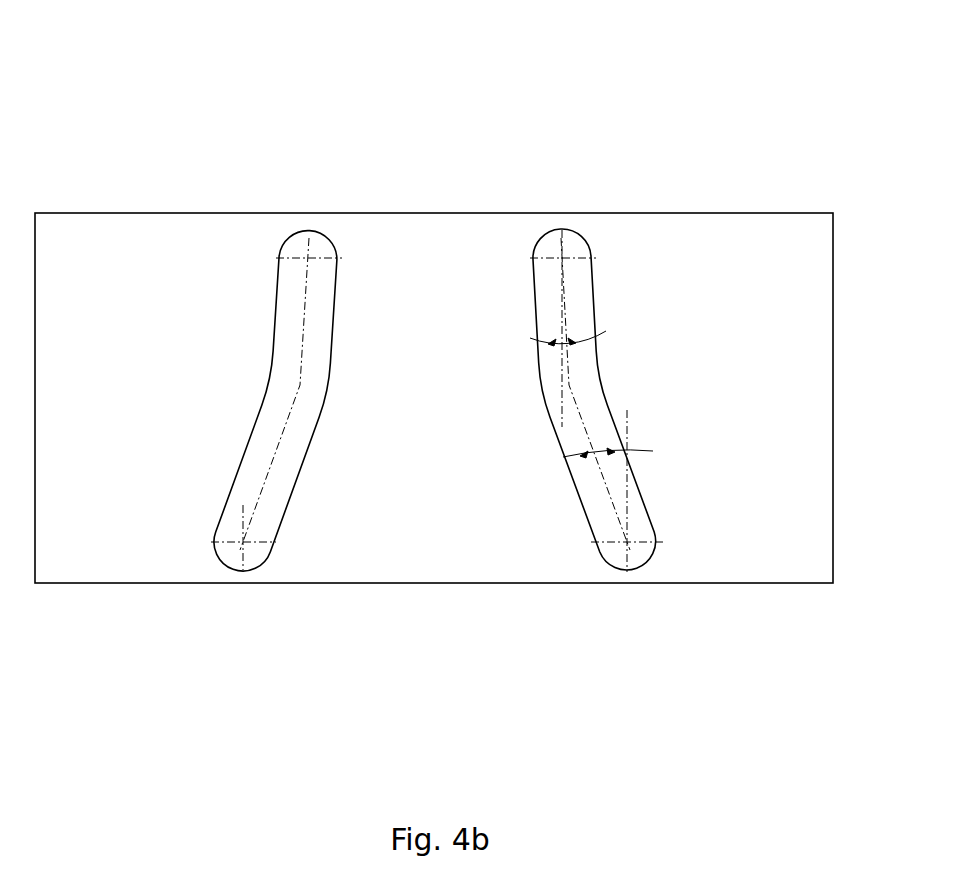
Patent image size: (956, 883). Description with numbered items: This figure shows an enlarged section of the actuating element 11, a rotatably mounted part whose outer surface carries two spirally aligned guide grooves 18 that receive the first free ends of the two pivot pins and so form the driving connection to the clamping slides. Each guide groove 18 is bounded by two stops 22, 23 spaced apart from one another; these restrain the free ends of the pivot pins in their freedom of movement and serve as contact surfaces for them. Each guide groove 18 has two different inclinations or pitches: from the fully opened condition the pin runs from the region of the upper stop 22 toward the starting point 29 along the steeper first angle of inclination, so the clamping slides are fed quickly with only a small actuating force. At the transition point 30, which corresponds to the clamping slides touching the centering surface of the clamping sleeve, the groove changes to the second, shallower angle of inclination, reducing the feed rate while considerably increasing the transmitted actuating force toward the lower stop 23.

The actuating element 11 is at (415, 298).
The guide grooves 18 is at (318, 458).
The stop 22 is at (311, 232).
The stop 23 is at (226, 563).
The starting point 29 is at (243, 542).
The transition point 30 is at (567, 383).